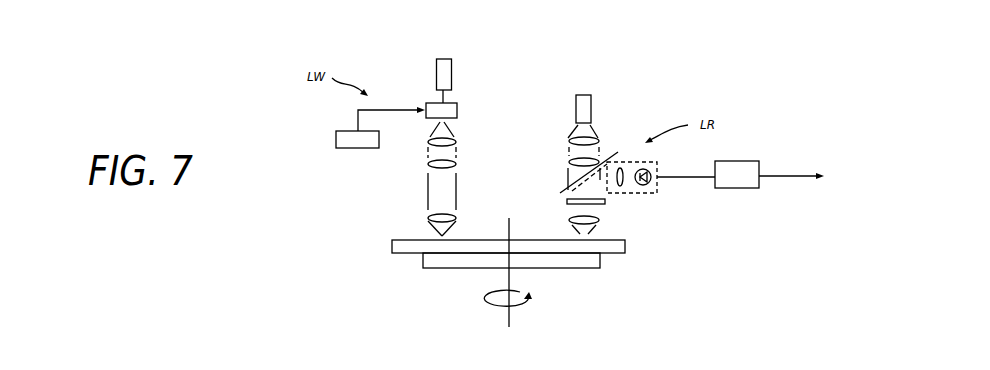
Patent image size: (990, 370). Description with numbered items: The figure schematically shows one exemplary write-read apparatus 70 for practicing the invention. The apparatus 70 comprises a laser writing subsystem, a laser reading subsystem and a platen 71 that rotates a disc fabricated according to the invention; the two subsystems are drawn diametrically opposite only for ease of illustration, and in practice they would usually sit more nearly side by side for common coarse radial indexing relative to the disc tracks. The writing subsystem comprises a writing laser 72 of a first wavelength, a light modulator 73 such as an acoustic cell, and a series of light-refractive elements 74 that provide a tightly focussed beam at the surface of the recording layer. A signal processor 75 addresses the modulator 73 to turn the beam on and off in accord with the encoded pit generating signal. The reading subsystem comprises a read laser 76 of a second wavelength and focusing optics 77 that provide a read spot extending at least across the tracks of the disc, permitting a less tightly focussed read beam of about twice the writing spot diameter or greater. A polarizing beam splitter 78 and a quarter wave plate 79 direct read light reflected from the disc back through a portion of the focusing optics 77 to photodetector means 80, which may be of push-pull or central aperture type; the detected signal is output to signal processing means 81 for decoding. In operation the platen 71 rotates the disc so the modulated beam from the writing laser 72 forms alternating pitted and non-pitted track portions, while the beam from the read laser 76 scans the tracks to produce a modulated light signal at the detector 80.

The write-read apparatus 70 is at (503, 273).
The platen 71 is at (590, 265).
The writing laser 72 is at (452, 65).
The light modulator 73 is at (457, 111).
The light-refractive elements 74 is at (464, 139).
The signal processor 75 is at (346, 148).
The read laser 76 is at (592, 100).
The focusing optics 77 is at (560, 137).
The polarizing beam splitter 78 is at (595, 162).
The quarter wave plate 79 is at (605, 202).
The photodetector means 80 is at (660, 190).
The signal processing means 81 is at (742, 188).